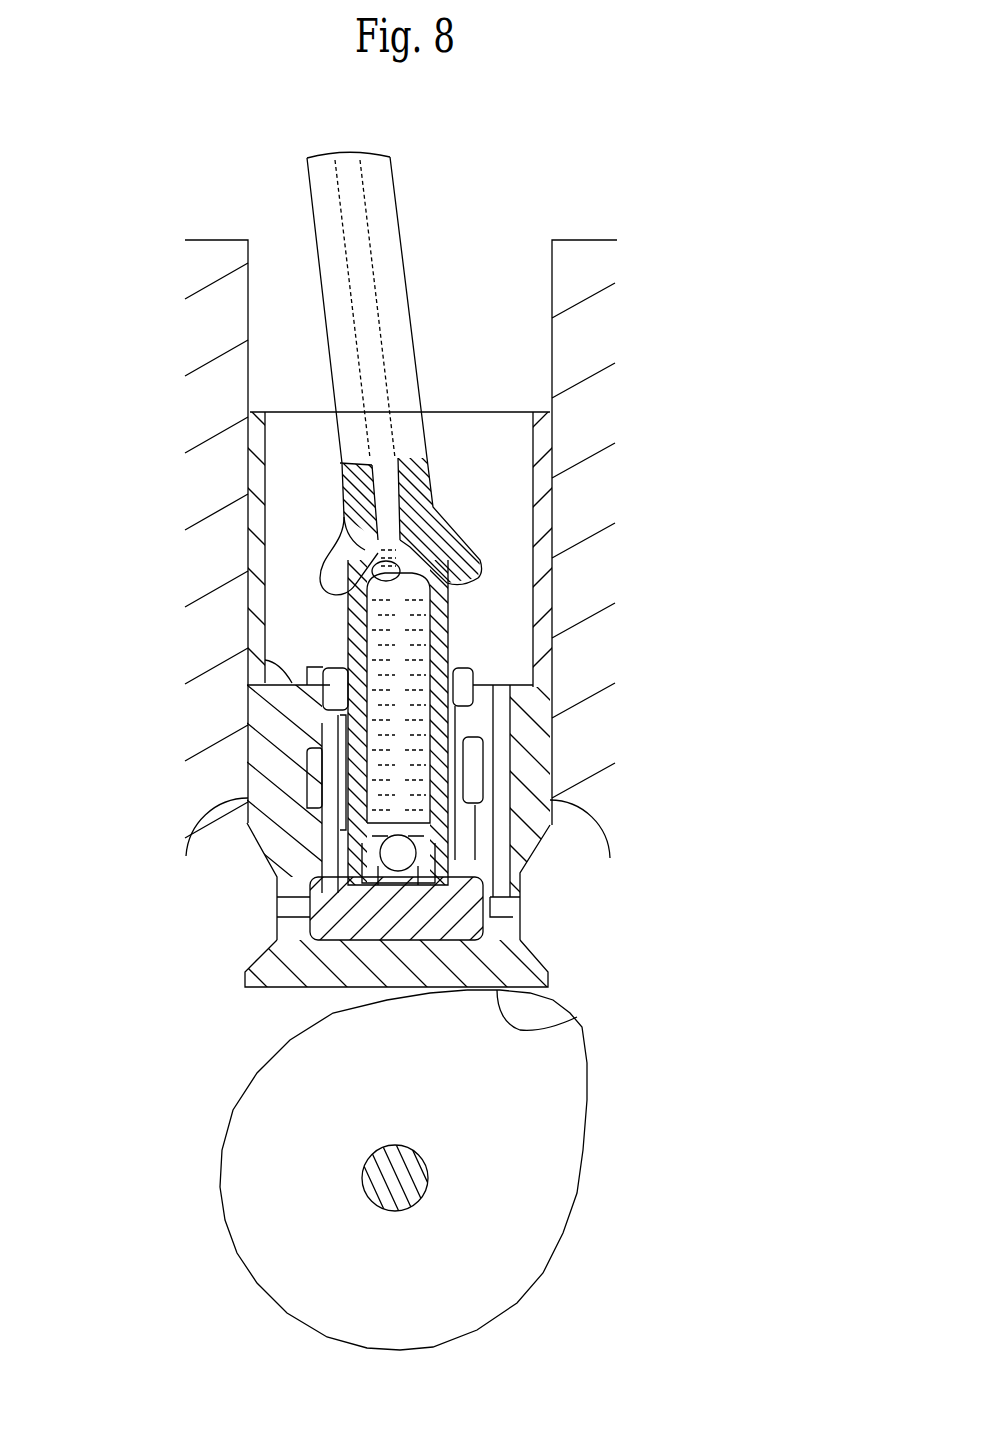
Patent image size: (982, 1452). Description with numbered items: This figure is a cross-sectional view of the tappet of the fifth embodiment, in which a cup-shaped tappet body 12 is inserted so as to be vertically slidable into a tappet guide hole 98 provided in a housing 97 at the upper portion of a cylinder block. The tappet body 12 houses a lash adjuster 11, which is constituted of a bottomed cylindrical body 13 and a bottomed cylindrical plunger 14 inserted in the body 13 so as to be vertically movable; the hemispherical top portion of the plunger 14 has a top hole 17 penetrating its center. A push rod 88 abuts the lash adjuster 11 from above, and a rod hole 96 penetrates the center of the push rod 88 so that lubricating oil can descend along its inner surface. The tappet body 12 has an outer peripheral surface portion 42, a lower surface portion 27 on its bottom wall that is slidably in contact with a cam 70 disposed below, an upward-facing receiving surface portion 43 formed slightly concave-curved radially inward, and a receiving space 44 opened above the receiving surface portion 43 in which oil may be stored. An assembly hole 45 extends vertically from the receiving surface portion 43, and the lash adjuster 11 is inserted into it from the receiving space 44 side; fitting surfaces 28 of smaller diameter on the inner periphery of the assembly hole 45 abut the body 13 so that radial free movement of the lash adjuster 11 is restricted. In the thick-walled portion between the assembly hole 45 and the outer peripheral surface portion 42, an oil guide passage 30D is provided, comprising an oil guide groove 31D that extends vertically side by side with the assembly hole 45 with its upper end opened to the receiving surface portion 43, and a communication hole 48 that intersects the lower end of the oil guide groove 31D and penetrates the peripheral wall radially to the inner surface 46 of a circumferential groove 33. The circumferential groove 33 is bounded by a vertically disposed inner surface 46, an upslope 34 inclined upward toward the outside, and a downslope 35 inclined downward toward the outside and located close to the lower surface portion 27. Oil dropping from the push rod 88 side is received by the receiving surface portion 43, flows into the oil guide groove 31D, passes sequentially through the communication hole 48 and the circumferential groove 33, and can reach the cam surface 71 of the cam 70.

The tappet guide hole 98 is at (250, 280).
The housing 97 is at (593, 240).
The push rod 88 is at (392, 193).
The rod hole 96 is at (383, 423).
The receiving space 44 is at (313, 490).
The outer peripheral surface portion 42 is at (247, 462).
The tappet body 12 is at (550, 497).
The top hole 17 is at (380, 568).
The plunger 14 is at (352, 633).
The body 13 is at (327, 687).
The lash adjuster 11 is at (126, 518).
The receiving surface portion 43 is at (293, 683).
The assembly hole 45 is at (313, 778).
The fitting surface 28 is at (467, 672).
The oil guide groove 31D is at (503, 803).
The oil guide passage 30D is at (733, 788).
The communication hole 48 is at (510, 912).
The upslope 34 is at (263, 857).
The circumferential groove 33 is at (156, 878).
The inner surface 46 is at (277, 923).
The downslope 35 is at (255, 960).
The lower surface portion 27 is at (580, 1020).
The cam surface 71 is at (588, 1087).
The cam 70 is at (563, 1167).